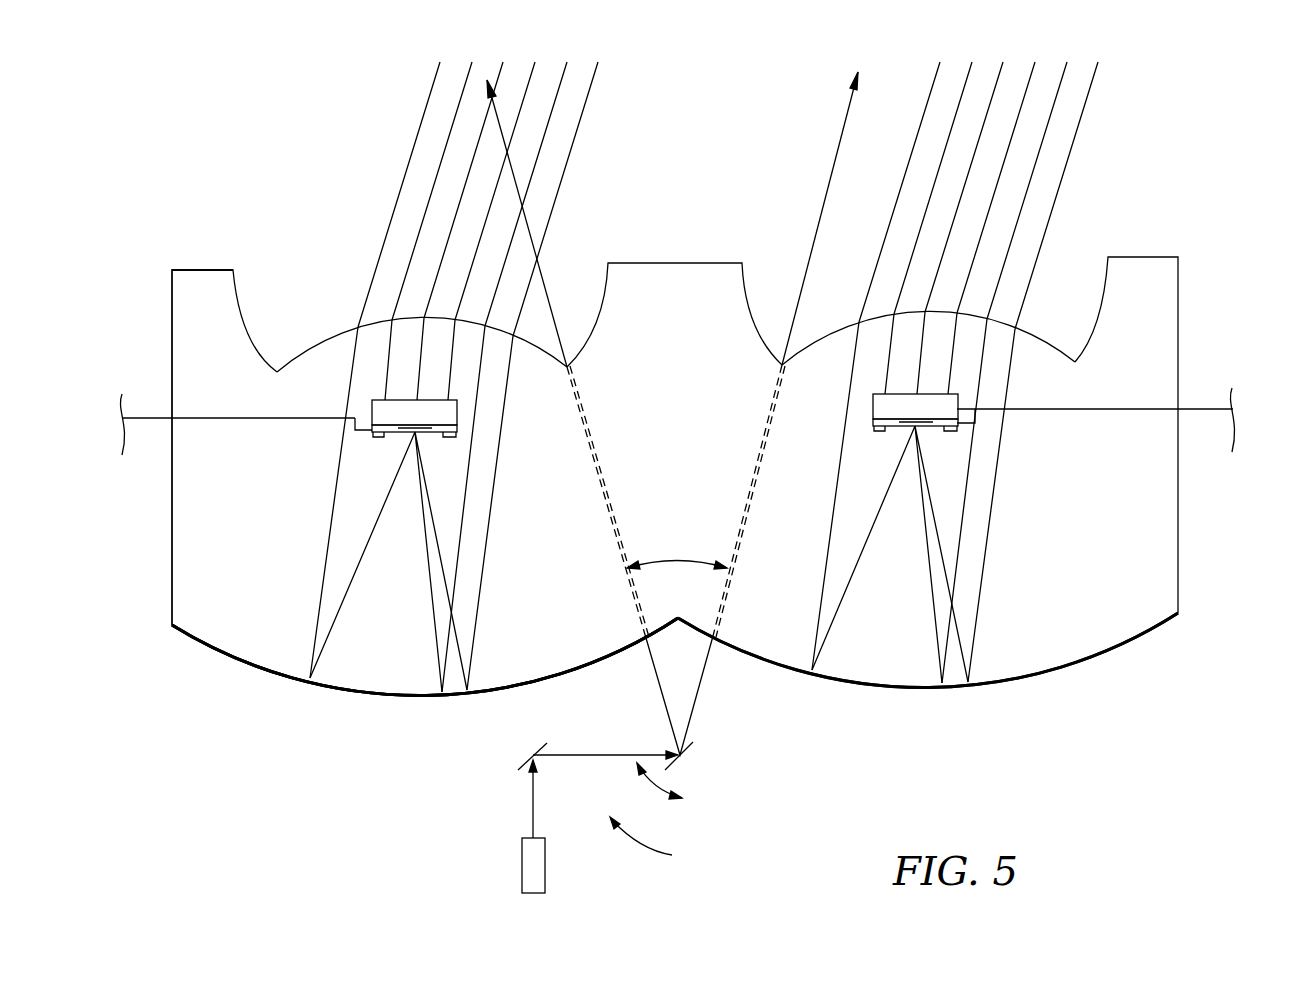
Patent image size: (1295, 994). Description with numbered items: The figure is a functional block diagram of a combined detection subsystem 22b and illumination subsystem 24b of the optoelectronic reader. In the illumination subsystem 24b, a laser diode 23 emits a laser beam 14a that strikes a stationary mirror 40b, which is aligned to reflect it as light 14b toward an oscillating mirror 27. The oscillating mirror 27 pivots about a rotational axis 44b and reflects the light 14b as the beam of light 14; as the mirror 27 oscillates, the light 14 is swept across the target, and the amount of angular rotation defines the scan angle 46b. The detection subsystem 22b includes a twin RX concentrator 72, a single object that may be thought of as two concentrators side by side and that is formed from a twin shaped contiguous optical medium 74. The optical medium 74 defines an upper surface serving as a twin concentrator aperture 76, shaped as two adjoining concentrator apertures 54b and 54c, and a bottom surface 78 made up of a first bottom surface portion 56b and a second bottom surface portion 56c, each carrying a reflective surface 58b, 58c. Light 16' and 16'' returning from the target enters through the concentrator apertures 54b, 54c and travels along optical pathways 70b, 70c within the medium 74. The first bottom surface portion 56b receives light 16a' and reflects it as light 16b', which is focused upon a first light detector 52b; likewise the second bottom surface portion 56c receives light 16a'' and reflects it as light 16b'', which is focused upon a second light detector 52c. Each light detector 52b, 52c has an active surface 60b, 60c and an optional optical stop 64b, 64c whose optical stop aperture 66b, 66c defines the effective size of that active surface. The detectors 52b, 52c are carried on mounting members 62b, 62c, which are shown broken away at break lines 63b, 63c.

The light 14 is at (540, 236).
The laser beam 14a is at (530, 795).
The reflected light 14b is at (600, 755).
The collimated light beam from first emitter 16' is at (464, 199).
The collimated light beam from second emitter 16'' is at (999, 195).
The light 16a' is at (408, 505).
The light 16a'' is at (920, 497).
The light 16b' is at (388, 562).
The light 16b'' is at (873, 554).
The detection subsystem 22b is at (140, 188).
The laser diode 23 is at (520, 866).
The illumination subsystem 24b is at (664, 842).
The oscillating mirror 27 is at (690, 750).
The stationary mirror 40b is at (530, 750).
The rotational axis 44b is at (690, 763).
The scan angle 46b is at (677, 560).
The light detector 52b is at (436, 423).
The light detector 52c is at (937, 417).
The concentrator aperture 54b is at (340, 333).
The concentrator aperture 54c is at (838, 330).
The first bottom surface portion 56b is at (280, 673).
The second bottom surface portion 56c is at (957, 688).
The reflective surface 58b is at (480, 690).
The reflective surface 58c is at (1067, 668).
The active surface 60b is at (393, 426).
The active surface 60c is at (937, 394).
The first support arm 62b is at (315, 430).
The second support arm 62c is at (1068, 410).
The first support break line 63b is at (152, 413).
The second support break line 63c is at (1208, 410).
The optical stop 64b is at (378, 433).
The optical stop 64c is at (880, 428).
The optical stop aperture 66b is at (428, 433).
The optical stop aperture 66c is at (906, 428).
The optical pathway 70b is at (615, 540).
The optical pathway 70c is at (742, 540).
The twin RX concentrator 72 is at (167, 554).
The twin shaped contiguous optical medium 74 is at (170, 322).
The twin concentrator aperture 76 is at (677, 260).
The bottom surface 78 is at (338, 694).